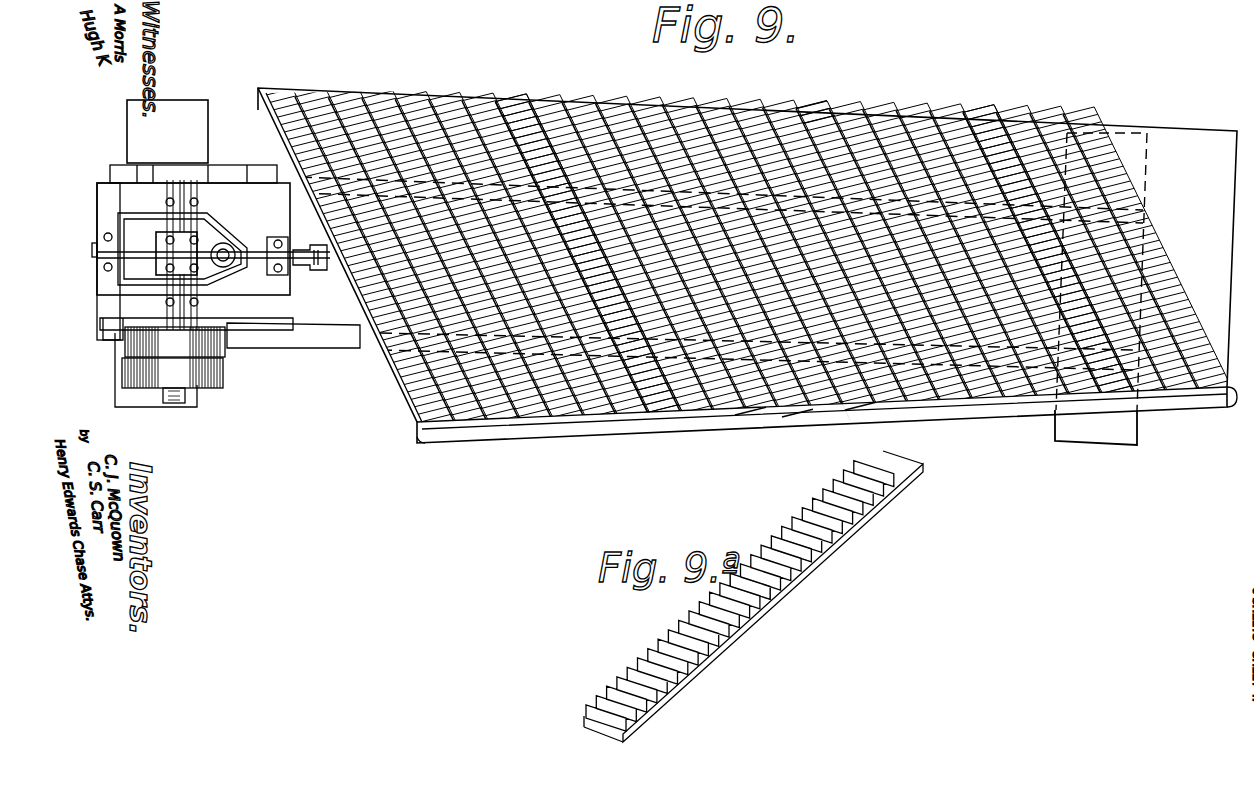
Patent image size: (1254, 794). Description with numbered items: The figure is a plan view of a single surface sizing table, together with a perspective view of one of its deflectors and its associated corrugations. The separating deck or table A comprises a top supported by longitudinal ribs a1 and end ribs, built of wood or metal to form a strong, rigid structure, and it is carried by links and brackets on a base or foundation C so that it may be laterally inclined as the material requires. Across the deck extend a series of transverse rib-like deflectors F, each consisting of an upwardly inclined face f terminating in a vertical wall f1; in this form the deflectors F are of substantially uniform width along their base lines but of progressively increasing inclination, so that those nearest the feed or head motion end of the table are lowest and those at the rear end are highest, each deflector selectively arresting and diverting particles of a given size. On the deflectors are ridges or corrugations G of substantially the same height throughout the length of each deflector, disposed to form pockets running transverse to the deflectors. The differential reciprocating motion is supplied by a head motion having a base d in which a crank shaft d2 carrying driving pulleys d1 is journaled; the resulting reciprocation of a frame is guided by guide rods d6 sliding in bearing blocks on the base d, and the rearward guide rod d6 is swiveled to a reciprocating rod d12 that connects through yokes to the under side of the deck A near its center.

In FIG. 9, the separating deck or table A is at (742, 96).
In FIG. 9, the ridges or corrugations G is at (525, 130).
In FIG. 9A, the ridges or corrugations G is at (773, 548).
In FIG. 9, the upwardly inclined face f is at (788, 113).
In FIG. 9A, the upwardly inclined face f is at (622, 742).
In FIG. 9, the vertical wall f1 is at (757, 410).
In FIG. 9A, the vertical wall f1 is at (813, 565).
In FIG. 9, the deflectors F is at (703, 407).
In FIG. 9A, the deflectors F is at (605, 732).
In FIG. 9, the longitudinal ribs a1 is at (1037, 400).
In FIG. 9, the base or foundation C is at (332, 337).
In FIG. 9, the base d is at (203, 203).
In FIG. 9, the guide rods d6 is at (115, 273).
In FIG. 9, the reciprocating rod d12 is at (327, 270).
In FIG. 9, the driving pulleys d1 is at (223, 355).
In FIG. 9, the crank shaft d2 is at (178, 405).